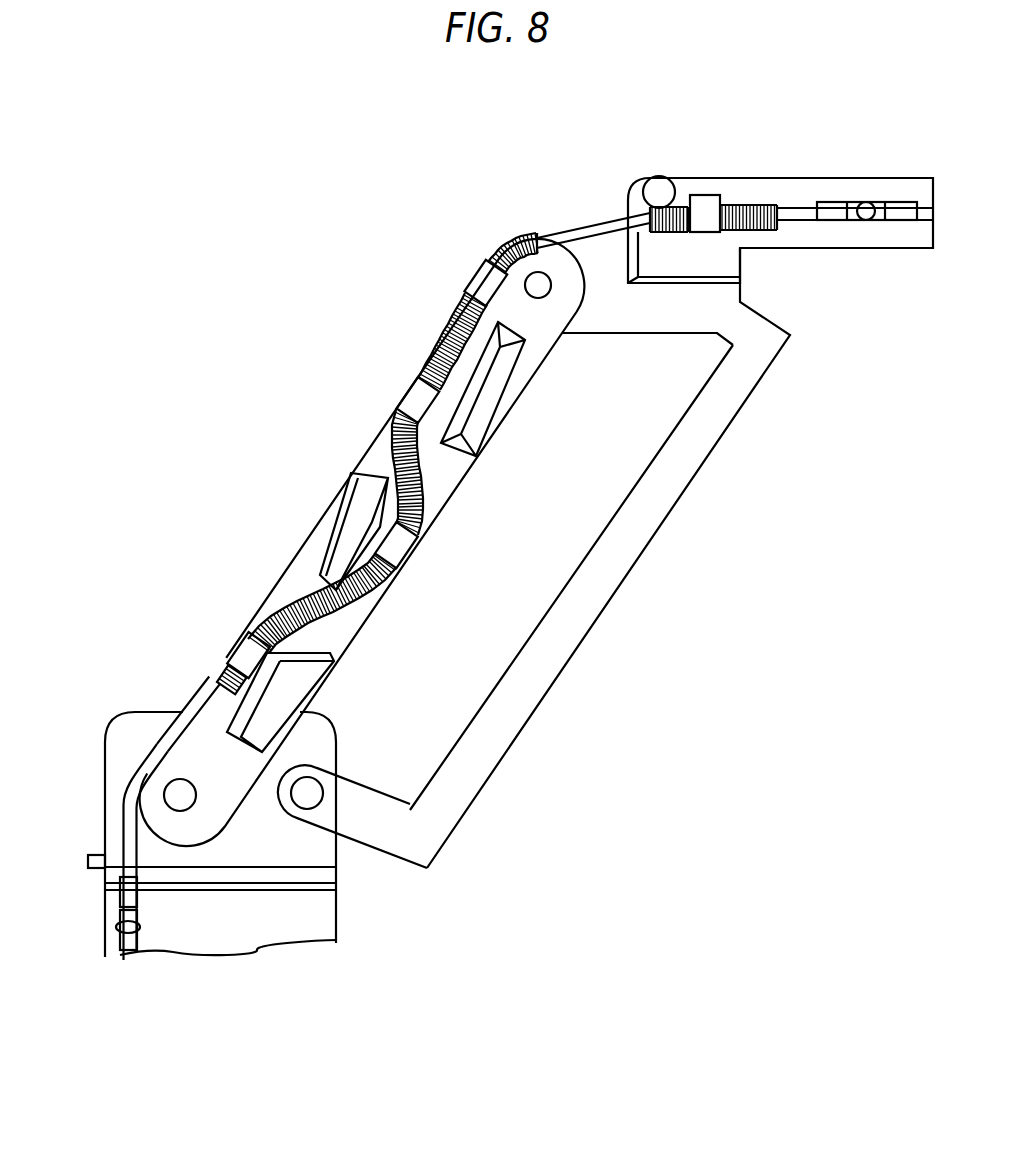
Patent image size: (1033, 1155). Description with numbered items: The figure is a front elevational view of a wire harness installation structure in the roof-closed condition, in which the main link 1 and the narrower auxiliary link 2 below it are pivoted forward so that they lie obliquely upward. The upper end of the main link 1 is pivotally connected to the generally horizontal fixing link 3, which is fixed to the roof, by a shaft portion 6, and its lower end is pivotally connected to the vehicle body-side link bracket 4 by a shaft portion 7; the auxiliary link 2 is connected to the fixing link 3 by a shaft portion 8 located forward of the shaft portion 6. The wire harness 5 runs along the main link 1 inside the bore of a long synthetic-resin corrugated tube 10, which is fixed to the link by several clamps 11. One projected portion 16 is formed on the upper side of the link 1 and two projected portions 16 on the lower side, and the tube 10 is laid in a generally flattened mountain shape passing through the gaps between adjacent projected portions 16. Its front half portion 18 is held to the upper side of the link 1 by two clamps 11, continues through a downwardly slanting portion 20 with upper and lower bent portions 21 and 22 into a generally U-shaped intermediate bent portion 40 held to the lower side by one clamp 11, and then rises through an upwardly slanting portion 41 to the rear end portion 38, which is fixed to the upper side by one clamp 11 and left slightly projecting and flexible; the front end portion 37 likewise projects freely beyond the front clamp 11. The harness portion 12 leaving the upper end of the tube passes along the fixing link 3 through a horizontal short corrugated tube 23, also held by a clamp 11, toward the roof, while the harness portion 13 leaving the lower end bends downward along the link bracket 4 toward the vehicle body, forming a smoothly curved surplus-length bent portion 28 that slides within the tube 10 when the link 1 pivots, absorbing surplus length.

The main link 1 is at (362, 444).
The auxiliary link 2 is at (574, 649).
The fixing link 3 is at (820, 178).
The link bracket 4 is at (147, 712).
The wire harness 5 is at (735, 193).
The shaft portion 6 is at (544, 290).
The shaft portion 7 is at (173, 800).
The shaft portion 8 is at (666, 196).
The corrugated tube 10 is at (294, 576).
The clamp 11 is at (414, 390).
The wire harness portion 12 is at (570, 235).
The wire harness portion 13 is at (135, 799).
The projected portion 16 is at (333, 517).
The front half portion 18 is at (455, 323).
The downwardly-slanting portion 20 is at (427, 460).
The bent portion 21 is at (398, 430).
The bent portion 22 is at (432, 522).
The short corrugated tube 23 is at (745, 203).
The bent portion 28 is at (135, 790).
The front end portion 37 is at (513, 248).
The rear end portion 38 is at (227, 670).
The bent portion 40 is at (346, 617).
The upwardly-slanting portion 41 is at (323, 617).